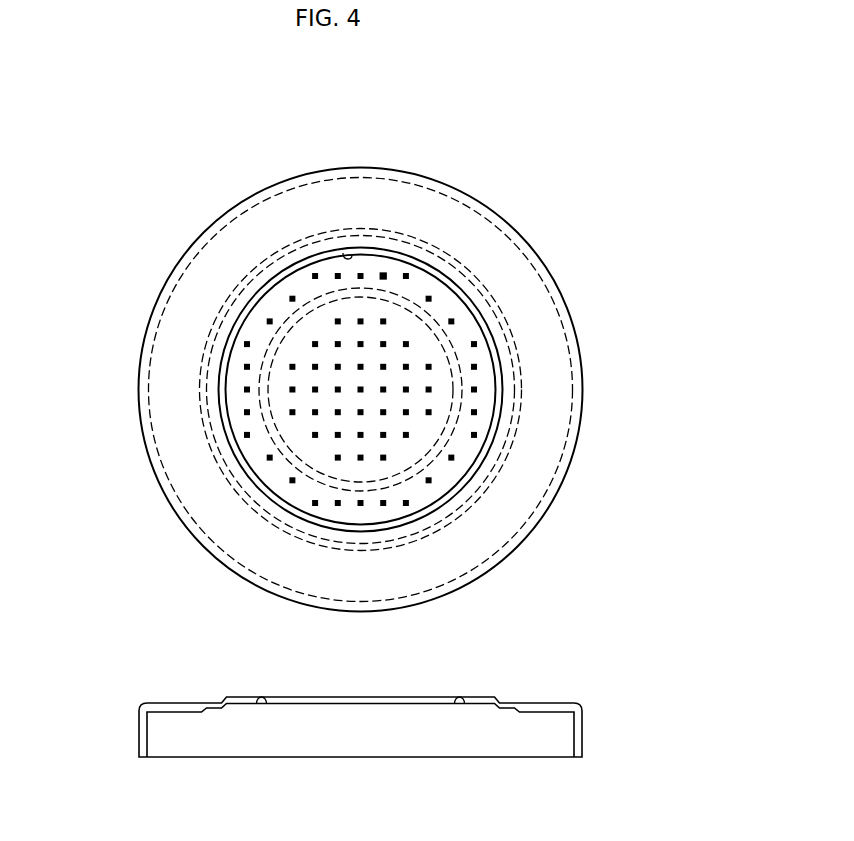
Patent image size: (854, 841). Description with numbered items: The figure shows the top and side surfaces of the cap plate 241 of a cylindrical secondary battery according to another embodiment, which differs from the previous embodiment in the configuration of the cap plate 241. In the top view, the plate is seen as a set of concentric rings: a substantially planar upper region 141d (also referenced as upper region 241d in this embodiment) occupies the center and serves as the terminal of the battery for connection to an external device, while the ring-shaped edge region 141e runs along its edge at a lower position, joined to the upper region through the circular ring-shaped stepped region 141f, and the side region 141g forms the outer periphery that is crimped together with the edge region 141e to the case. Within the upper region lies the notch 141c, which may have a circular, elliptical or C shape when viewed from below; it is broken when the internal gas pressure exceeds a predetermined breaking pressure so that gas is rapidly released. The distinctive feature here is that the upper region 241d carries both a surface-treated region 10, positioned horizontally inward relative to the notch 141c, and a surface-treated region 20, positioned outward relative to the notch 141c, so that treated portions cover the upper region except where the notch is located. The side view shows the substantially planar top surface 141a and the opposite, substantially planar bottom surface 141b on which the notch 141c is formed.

The cap plate 241 is at (491, 116).
The upper region 241d is at (343, 255).
The surface-treated region 20 is at (383, 274).
The surface-treated region 10 is at (290, 367).
The upper region 141d is at (277, 290).
The stepped region 141f is at (485, 325).
The edge region 141e is at (547, 351).
The side region 141g is at (582, 382).
The notch 141c is at (457, 424).
The top surface 141a is at (288, 696).
The bottom surface 141b is at (301, 706).